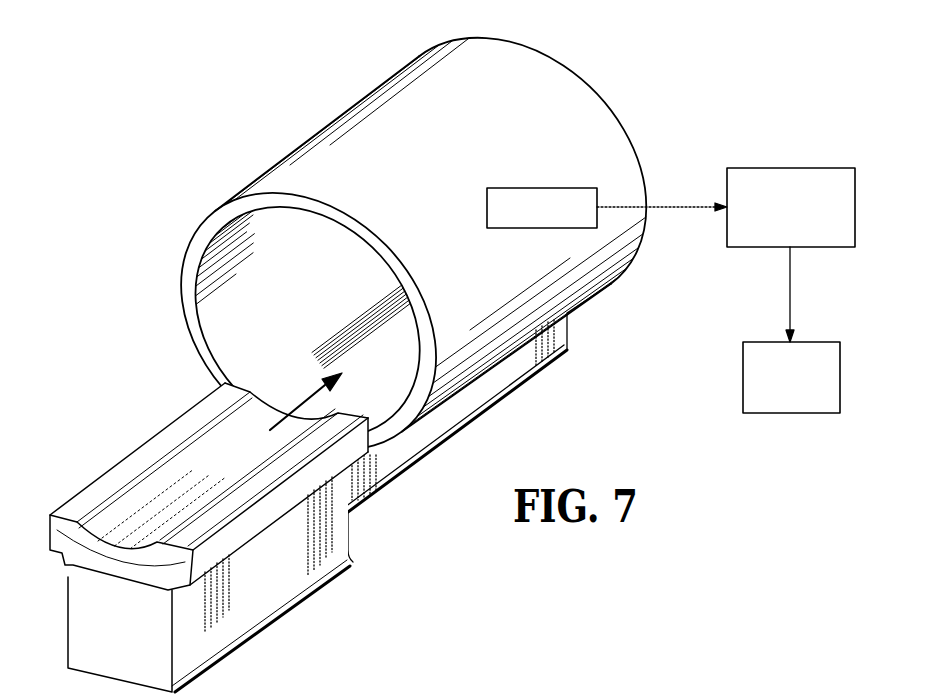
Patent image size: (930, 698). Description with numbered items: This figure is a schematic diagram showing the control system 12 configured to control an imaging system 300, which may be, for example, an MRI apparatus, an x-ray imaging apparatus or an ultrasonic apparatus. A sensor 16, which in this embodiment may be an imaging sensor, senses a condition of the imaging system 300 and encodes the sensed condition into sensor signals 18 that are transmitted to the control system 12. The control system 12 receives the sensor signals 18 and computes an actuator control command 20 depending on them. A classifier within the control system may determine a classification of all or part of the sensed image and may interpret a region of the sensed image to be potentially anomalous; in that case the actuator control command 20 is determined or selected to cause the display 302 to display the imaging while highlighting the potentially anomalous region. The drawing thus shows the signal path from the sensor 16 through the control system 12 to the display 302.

The imaging system 300 is at (238, 68).
The sensor 16 is at (545, 188).
The sensor signals 18 is at (665, 207).
The control system 12 is at (793, 168).
The actuator control command 20 is at (791, 303).
The display 302 is at (813, 342).